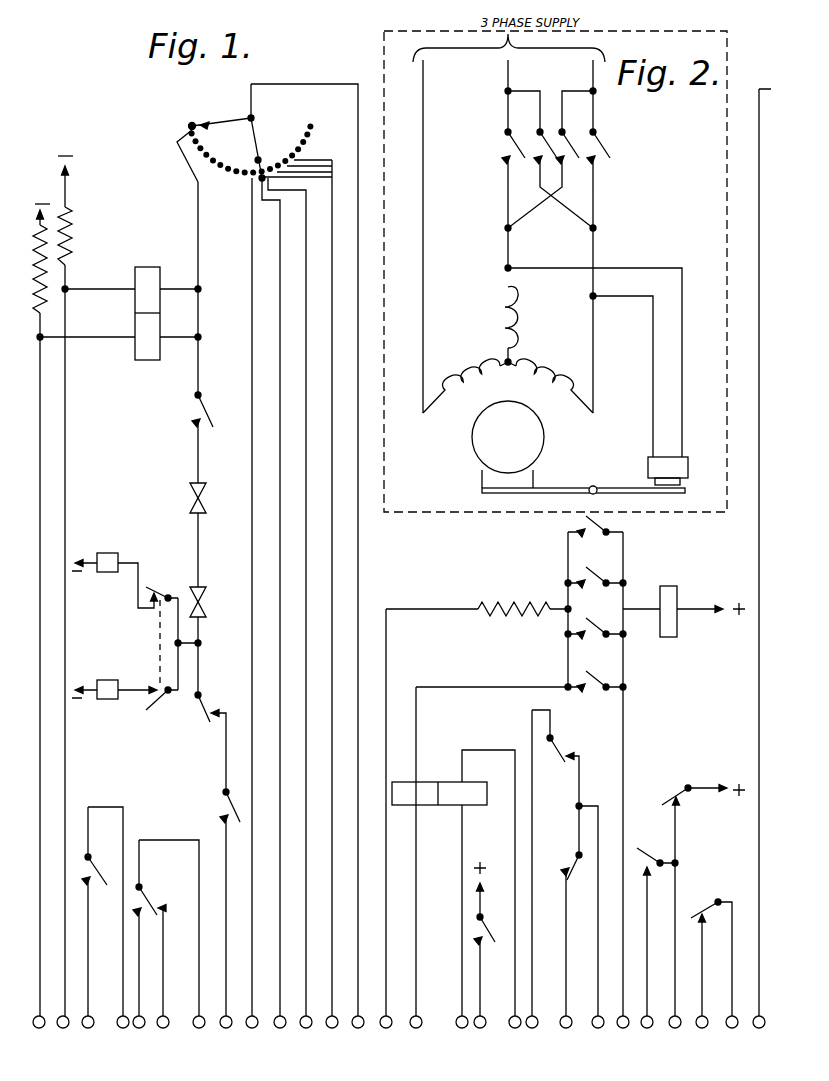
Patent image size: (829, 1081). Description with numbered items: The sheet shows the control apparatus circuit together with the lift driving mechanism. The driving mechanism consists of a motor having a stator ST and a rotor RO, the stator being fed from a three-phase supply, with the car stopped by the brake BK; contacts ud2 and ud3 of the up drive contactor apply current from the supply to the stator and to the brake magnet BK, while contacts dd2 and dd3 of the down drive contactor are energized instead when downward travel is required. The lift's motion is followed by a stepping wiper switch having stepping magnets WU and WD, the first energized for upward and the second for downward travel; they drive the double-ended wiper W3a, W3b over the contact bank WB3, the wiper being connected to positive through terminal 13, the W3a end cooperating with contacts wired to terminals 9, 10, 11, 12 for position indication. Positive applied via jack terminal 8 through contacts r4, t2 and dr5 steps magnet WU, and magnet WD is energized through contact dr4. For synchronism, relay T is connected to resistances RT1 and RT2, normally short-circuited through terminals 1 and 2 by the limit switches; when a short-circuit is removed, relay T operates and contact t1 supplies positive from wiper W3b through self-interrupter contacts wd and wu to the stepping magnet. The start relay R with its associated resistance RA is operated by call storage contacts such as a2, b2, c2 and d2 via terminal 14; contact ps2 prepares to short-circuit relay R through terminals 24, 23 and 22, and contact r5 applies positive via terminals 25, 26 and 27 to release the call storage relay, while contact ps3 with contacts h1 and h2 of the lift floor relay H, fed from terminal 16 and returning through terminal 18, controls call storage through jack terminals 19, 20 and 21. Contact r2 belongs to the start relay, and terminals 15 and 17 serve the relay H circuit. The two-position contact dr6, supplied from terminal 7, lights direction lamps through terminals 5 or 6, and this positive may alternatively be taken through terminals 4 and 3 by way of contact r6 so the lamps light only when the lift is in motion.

In FIG. 1, the resistance RT1 is at (30, 262).
In FIG. 1, the resistance RT2 is at (65, 258).
In FIG. 1, the synchronizing relay T is at (135, 330).
In FIG. 1, the wiper W3a is at (258, 150).
In FIG. 1, the wiper W3b is at (240, 120).
In FIG. 1, the contact bank WB3 is at (308, 132).
In FIG. 1, the contact t1 is at (205, 403).
In FIG. 1, the self-interrupter contact wd is at (204, 496).
In FIG. 1, the self-interrupter contact wu is at (204, 600).
In FIG. 1, the stepping magnet WD is at (111, 548).
In FIG. 1, the stepping magnet WU is at (111, 675).
In FIG. 1, the contact dr4 is at (148, 596).
In FIG. 1, the contact dr5 is at (150, 707).
In FIG. 1, the contact t2 is at (205, 704).
In FIG. 1, the contact r4 is at (226, 806).
In FIG. 1, the contact r6 is at (95, 866).
In FIG. 1, the two position contact dr6 is at (165, 890).
In FIG. 1, the resistance RA is at (512, 618).
In FIG. 1, the start relay R is at (660, 632).
In FIG. 1, the contact a2 is at (595, 536).
In FIG. 1, the contact b2 is at (595, 587).
In FIG. 1, the contact c2 is at (598, 638).
In FIG. 1, the contact d2 is at (593, 691).
In FIG. 1, the lift floor relay H is at (450, 808).
In FIG. 1, the contact ps3 is at (553, 758).
In FIG. 1, the contact h1 is at (570, 862).
In FIG. 1, the contact h2 is at (492, 925).
In FIG. 1, the contact r2 is at (668, 796).
In FIG. 1, the contact ps2 is at (652, 843).
In FIG. 1, the contact r5 is at (705, 897).
In FIG. 2, the contact ud2 is at (516, 150).
In FIG. 2, the contact ud3 is at (601, 148).
In FIG. 2, the contact dd2 is at (540, 155).
In FIG. 2, the contact dd3 is at (570, 152).
In FIG. 2, the stator ST is at (508, 349).
In FIG. 2, the rotor RO is at (483, 444).
In FIG. 2, the brake BK is at (648, 467).
In FIG. 1, the terminal 1 is at (39, 1033).
In FIG. 1, the terminal 2 is at (63, 1028).
In FIG. 1, the terminal 3 is at (88, 1033).
In FIG. 1, the terminal 4 is at (123, 1028).
In FIG. 1, the terminal 5 is at (139, 1033).
In FIG. 1, the terminal 6 is at (163, 1028).
In FIG. 1, the terminal 7 is at (199, 1033).
In FIG. 1, the jack terminal 8 is at (226, 1028).
In FIG. 1, the terminal 9 is at (252, 1033).
In FIG. 1, the terminal 10 is at (280, 1028).
In FIG. 1, the terminal 11 is at (306, 1033).
In FIG. 1, the terminal 12 is at (332, 1028).
In FIG. 1, the terminal 13 is at (358, 1033).
In FIG. 1, the jack terminal 14 is at (386, 1028).
In FIG. 1, the terminal 15 is at (416, 1033).
In FIG. 1, the terminal 16 is at (462, 1028).
In FIG. 1, the terminal 17 is at (485, 1033).
In FIG. 1, the terminal 18 is at (515, 1028).
In FIG. 1, the jack terminal 19 is at (537, 1033).
In FIG. 1, the jack terminal 20 is at (566, 1028).
In FIG. 1, the terminal 21 is at (598, 1033).
In FIG. 1, the terminal 22 is at (623, 1028).
In FIG. 1, the terminal 23 is at (650, 1033).
In FIG. 1, the jack terminal 24 is at (675, 1028).
In FIG. 1, the terminal 25 is at (704, 1033).
In FIG. 1, the terminal 26 is at (732, 1028).
In FIG. 1, the terminal 27 is at (761, 1033).